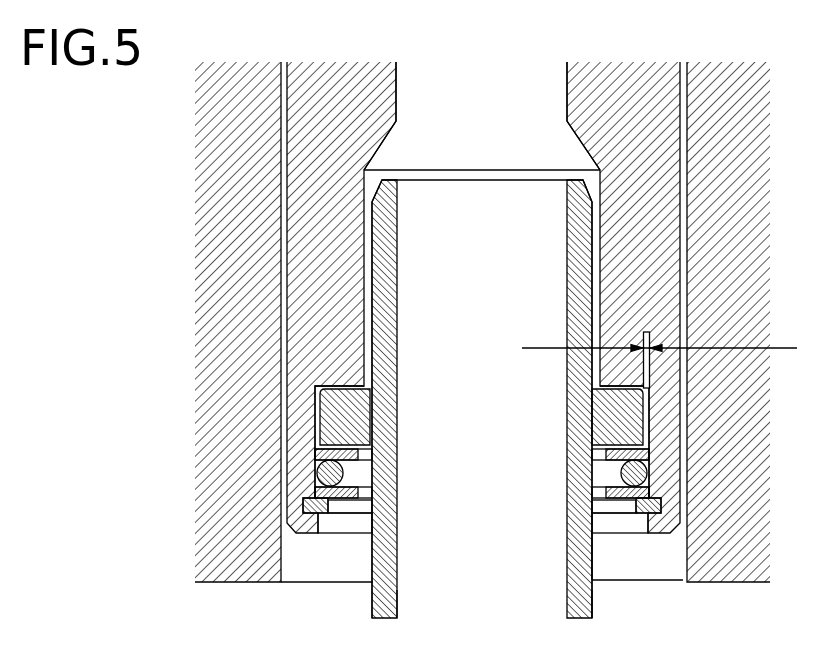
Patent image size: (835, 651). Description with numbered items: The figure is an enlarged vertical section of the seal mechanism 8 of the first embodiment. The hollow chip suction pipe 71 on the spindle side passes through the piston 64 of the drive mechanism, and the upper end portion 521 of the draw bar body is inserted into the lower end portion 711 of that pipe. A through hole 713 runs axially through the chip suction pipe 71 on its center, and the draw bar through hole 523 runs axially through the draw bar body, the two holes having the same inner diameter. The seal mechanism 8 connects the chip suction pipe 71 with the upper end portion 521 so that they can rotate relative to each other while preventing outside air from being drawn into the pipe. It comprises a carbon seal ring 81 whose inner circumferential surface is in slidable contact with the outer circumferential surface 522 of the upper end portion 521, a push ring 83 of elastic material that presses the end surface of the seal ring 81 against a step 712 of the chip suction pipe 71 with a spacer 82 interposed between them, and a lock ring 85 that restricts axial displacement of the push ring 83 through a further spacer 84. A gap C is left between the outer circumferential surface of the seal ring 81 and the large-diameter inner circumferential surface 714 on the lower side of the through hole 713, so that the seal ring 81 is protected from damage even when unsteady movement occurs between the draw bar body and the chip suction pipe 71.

The piston 64 is at (735, 530).
The chip suction pipe on the spindle side 71 is at (633, 75).
The lower end portion of the chip suction pipe 711 is at (514, 394).
The step 712 is at (360, 392).
The through hole 713 is at (397, 78).
The large-diameter inner circumferential surface 714 is at (652, 419).
The seal mechanism 8 is at (482, 503).
The carbon seal ring 81 is at (362, 423).
The spacer 82 is at (358, 452).
The push ring 83 is at (345, 476).
The spacer 84 is at (355, 494).
The lock ring 85 is at (348, 513).
The upper end portion of the draw bar body 521 is at (586, 548).
The outer circumferential surface 522 is at (593, 608).
The draw bar through hole 523 is at (398, 599).